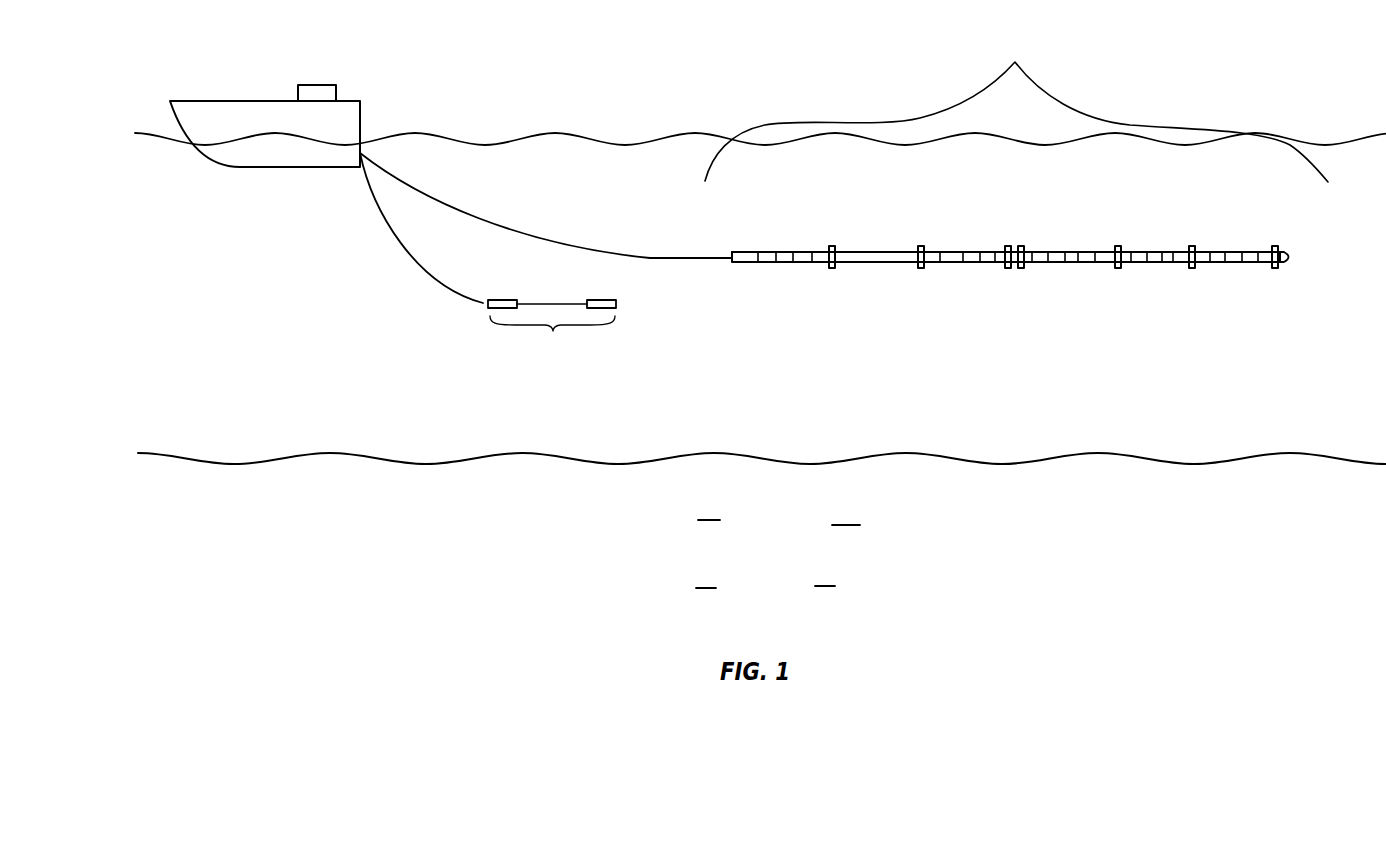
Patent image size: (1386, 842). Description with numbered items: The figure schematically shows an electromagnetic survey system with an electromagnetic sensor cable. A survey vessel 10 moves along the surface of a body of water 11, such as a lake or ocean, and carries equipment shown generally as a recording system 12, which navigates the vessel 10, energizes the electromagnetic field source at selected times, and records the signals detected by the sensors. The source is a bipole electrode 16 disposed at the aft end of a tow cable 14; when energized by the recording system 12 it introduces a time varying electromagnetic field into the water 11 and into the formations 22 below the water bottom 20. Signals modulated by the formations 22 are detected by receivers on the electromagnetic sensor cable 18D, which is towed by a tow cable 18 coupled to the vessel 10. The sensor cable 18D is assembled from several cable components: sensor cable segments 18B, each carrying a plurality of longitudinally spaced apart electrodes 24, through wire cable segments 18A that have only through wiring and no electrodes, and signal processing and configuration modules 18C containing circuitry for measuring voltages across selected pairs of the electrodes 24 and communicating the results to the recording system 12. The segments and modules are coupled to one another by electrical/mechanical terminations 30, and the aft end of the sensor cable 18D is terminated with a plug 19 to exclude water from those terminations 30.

The survey vessel 10 is at (343, 118).
The body of water 11 is at (1275, 174).
The recording system 12 is at (315, 85).
The tow cable 14 is at (400, 247).
The bipole electrode 16 is at (552, 333).
The tow cable 18 is at (513, 238).
The through wire cable segment 18A is at (876, 252).
The sensor cable segment 18B is at (1140, 252).
The signal processing and configuration module 18C is at (1015, 246).
The electromagnetic sensor cable 18D is at (1016, 107).
The plug 19 is at (1292, 257).
The water bottom 20 is at (780, 462).
The formations 22 is at (753, 556).
The electrodes 24 is at (758, 252).
The electrical/mechanical terminations 30 is at (832, 246).